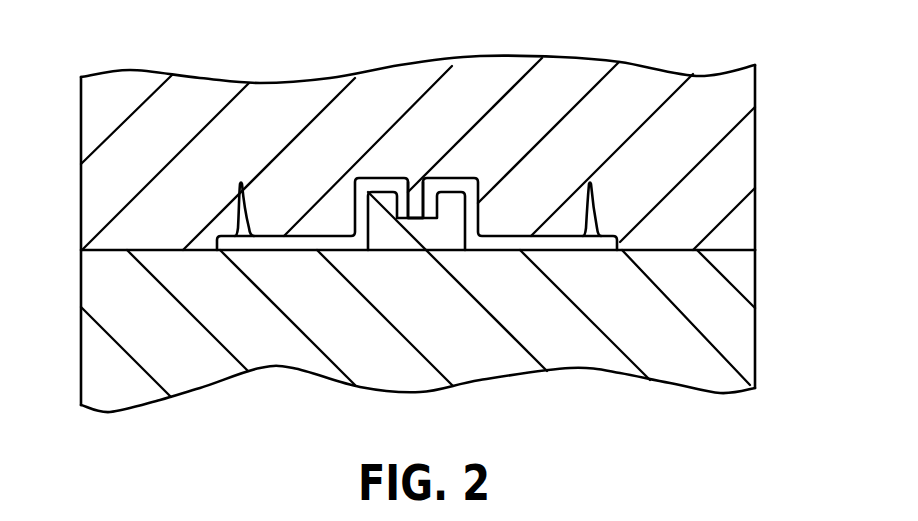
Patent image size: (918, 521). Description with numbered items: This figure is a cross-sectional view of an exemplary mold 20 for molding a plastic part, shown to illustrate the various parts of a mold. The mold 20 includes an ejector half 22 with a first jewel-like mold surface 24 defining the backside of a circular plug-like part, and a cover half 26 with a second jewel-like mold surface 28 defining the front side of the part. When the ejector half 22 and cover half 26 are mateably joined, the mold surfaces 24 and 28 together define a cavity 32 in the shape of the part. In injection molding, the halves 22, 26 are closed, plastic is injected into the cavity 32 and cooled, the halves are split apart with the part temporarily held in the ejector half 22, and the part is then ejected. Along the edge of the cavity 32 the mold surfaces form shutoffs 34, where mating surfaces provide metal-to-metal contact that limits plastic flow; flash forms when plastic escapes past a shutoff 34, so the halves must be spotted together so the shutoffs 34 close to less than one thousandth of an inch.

The mold 20 is at (71, 64).
The ejector half 22 is at (755, 103).
The first jewel-like mold surface 24 is at (503, 238).
The cover half 26 is at (755, 337).
The second jewel-like mold surface 28 is at (541, 253).
The cavity 32 is at (309, 250).
The shutoffs 34 is at (212, 252).